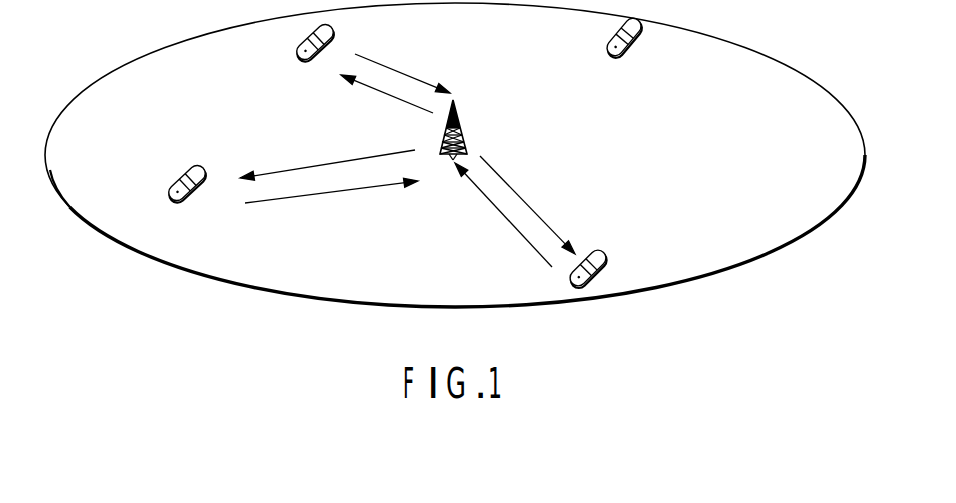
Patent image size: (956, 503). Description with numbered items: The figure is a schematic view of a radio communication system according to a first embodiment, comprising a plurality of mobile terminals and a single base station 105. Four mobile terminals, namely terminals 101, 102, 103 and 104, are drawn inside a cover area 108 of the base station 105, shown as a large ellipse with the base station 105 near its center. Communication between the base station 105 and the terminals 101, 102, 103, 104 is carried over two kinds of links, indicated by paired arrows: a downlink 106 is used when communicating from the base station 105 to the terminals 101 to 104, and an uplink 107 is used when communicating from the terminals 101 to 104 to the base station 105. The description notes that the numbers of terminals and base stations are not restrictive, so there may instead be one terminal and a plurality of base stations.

The terminal 101 is at (302, 33).
The terminal 102 is at (193, 168).
The terminal 103 is at (605, 266).
The terminal 104 is at (614, 28).
The base station 105 is at (460, 130).
The downlink 106 is at (363, 84).
The uplink 107 is at (405, 73).
The cover area 108 is at (730, 42).